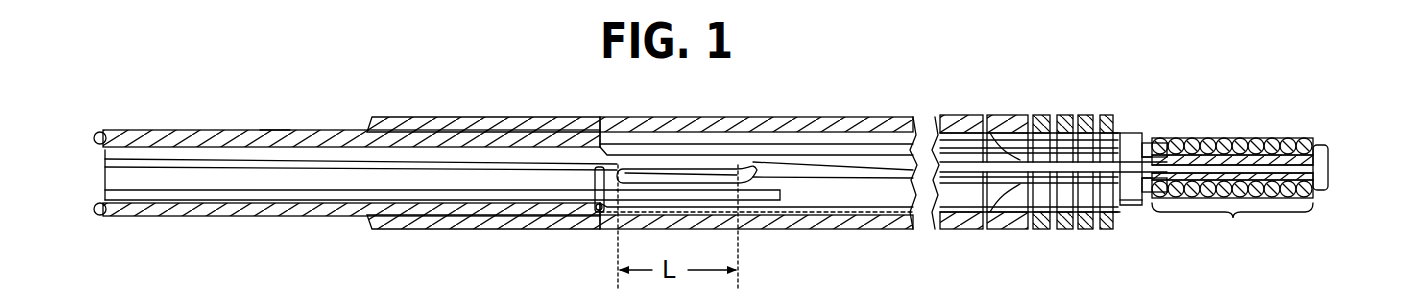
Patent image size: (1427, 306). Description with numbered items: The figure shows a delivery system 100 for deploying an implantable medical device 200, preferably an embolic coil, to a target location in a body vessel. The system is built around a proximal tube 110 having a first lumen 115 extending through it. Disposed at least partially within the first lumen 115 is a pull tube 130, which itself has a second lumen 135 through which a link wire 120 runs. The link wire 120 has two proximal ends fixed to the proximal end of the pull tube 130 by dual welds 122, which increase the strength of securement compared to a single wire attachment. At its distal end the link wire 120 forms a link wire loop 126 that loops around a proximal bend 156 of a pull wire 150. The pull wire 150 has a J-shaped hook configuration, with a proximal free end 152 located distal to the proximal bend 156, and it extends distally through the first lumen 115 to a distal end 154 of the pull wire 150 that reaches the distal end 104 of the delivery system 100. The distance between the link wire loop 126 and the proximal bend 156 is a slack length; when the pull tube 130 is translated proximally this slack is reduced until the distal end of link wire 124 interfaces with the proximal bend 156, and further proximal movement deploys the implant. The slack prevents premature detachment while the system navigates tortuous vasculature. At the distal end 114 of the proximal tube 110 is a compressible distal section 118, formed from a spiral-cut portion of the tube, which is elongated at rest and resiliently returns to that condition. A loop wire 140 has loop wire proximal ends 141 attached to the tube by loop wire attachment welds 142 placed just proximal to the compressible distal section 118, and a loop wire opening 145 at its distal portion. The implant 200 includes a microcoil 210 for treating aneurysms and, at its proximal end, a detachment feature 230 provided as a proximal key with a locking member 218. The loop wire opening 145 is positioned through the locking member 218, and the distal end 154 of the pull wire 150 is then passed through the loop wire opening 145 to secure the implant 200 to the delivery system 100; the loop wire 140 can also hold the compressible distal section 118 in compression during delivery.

The delivery system 100 is at (524, 116).
The distal end of the delivery system 104 is at (1145, 133).
The proximal tube 110 is at (420, 229).
The distal end of the delivery tube 114 is at (1145, 133).
The first lumen 115 is at (838, 130).
The compressible distal section 118 is at (1060, 231).
The link wire 120 is at (410, 125).
The dual welds 122 is at (103, 131).
The distal end of link wire 124 is at (509, 185).
The link wire loop 126 is at (740, 168).
The pull tube 130 is at (185, 130).
The second lumen 135 is at (275, 130).
The loop wire 140 is at (1050, 116).
The loop wire proximal ends 141 is at (1003, 125).
The loop wire attachment welds 142 is at (1005, 118).
The loop wire opening 145 is at (1128, 200).
The pull wire 150 is at (953, 229).
The proximal free end 152 is at (790, 200).
The distal end of the pull wire 154 is at (1167, 135).
The proximal bend 156 is at (600, 215).
The implantable medical device 200 is at (1295, 135).
The microcoil 210 is at (1232, 230).
The locking member 218 is at (1160, 135).
The detachment feature 230 is at (1143, 207).